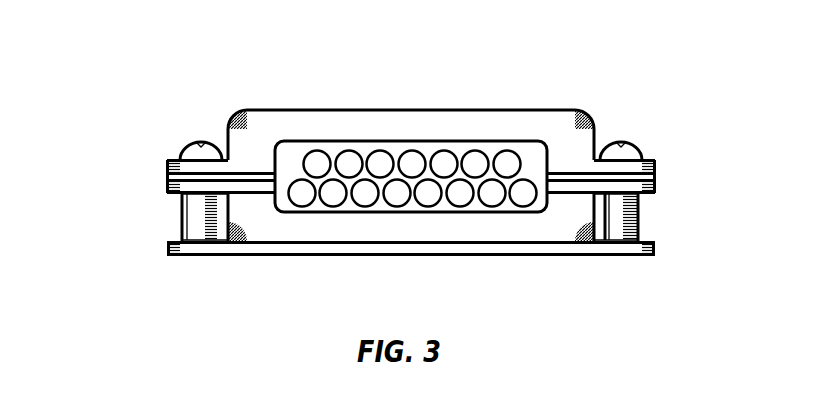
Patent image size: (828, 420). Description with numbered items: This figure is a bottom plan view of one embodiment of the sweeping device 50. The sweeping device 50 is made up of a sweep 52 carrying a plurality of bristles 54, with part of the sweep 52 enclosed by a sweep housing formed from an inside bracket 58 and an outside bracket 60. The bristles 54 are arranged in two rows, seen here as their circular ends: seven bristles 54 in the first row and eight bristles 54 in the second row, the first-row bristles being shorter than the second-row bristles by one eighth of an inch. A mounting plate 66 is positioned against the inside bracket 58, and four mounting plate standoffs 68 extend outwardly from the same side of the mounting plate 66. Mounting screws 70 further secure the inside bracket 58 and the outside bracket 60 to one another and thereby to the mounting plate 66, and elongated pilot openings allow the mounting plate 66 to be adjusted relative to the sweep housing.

The sweeping device 50 is at (154, 46).
The sweep 52 is at (292, 148).
The bristles 54 is at (318, 160).
The inside bracket 58 is at (512, 230).
The outside bracket 60 is at (550, 123).
The mounting plate 66 is at (593, 248).
The mounting plate standoffs 68 is at (193, 228).
The mounting screws 70 is at (188, 150).